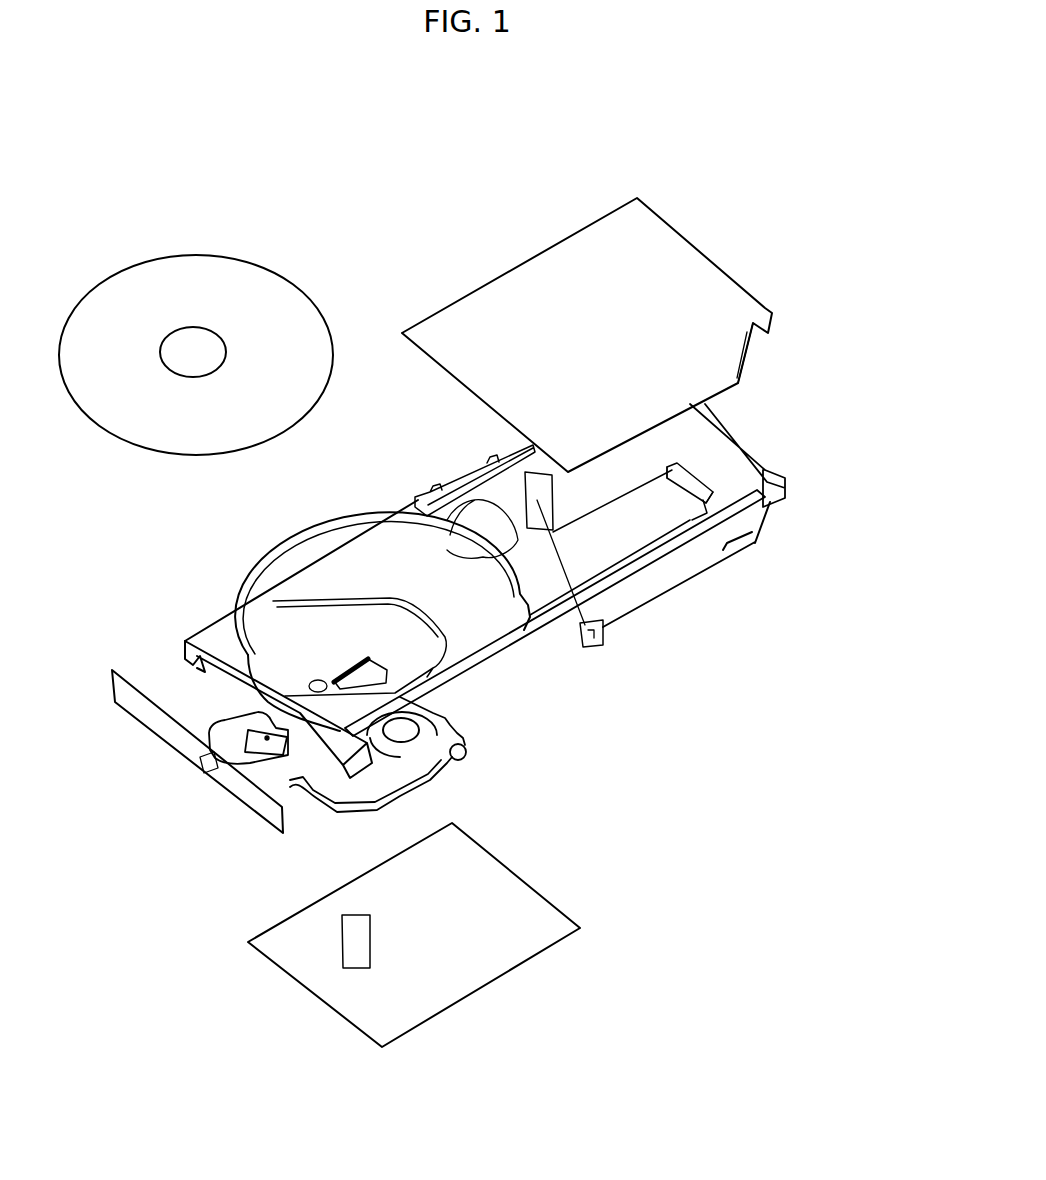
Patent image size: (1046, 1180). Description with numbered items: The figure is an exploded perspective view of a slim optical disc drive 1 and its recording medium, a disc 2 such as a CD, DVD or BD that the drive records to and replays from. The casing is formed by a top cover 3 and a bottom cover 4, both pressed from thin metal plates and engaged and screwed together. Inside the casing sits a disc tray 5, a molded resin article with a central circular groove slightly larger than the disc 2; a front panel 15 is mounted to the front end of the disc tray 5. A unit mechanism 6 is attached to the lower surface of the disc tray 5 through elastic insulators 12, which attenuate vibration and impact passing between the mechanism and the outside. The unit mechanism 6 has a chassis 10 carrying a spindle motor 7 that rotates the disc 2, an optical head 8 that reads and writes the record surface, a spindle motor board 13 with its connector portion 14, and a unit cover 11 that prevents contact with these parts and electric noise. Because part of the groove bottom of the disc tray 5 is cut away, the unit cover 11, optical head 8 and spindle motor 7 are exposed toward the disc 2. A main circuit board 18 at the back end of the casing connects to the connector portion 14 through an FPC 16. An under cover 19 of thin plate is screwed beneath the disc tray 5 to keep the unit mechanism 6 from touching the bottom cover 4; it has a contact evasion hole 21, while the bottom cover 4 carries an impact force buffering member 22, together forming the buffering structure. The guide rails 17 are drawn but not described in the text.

The optical disc drive 1 is at (722, 784).
The disc 2 is at (250, 323).
The top cover 3 is at (682, 268).
The bottom cover 4 is at (697, 545).
The disc tray 5 is at (330, 580).
The unit mechanism 6 is at (417, 813).
The spindle motor 7 is at (410, 743).
The optical head 8 is at (267, 738).
The chassis 10 is at (332, 817).
The unit cover 11 is at (358, 803).
The insulator 12 is at (462, 763).
The spindle motor board 13 is at (370, 675).
The connector portion 14 is at (330, 683).
The front panel 15 is at (147, 728).
The FPC (Flexible Printed Circuit board) 16 is at (643, 532).
The guide rails 17 is at (457, 490).
The main circuit board 18 is at (735, 492).
The under cover 19 is at (472, 968).
The contact evasion hole 21 is at (593, 637).
The impact force buffering member 22 is at (355, 940).